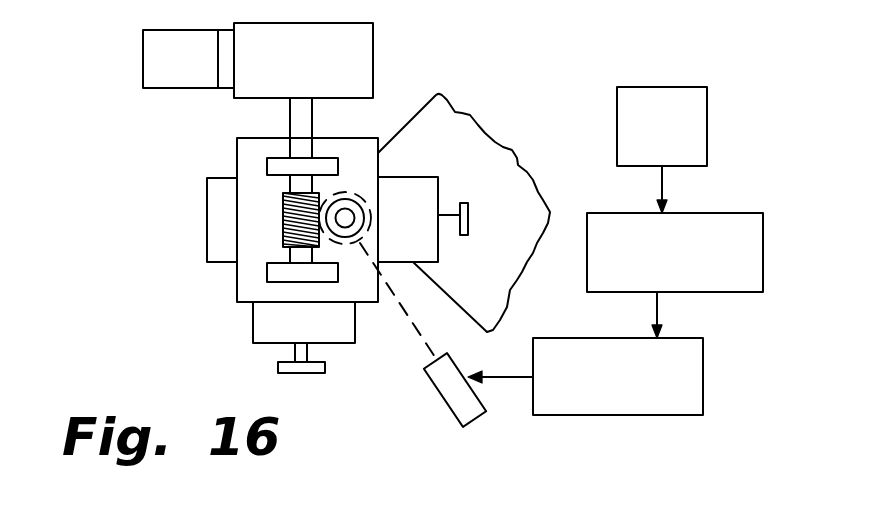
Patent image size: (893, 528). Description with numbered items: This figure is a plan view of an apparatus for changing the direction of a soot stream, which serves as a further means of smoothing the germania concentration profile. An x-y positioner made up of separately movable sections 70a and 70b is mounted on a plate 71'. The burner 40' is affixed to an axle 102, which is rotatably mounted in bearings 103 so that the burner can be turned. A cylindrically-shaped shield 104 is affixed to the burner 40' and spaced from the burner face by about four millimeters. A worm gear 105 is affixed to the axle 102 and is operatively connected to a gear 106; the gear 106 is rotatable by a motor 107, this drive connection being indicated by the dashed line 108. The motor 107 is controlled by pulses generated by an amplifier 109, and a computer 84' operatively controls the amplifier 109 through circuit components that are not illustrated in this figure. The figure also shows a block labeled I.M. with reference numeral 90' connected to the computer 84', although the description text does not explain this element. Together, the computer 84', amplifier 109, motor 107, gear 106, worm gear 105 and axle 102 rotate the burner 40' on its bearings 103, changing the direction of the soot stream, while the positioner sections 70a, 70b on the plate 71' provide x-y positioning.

The cylindrically-shaped shield 104 is at (158, 57).
The burner 40' is at (341, 60).
The axle 102 is at (300, 118).
The bearings 103 is at (283, 166).
The worm gear 105 is at (293, 217).
The gear 106 is at (364, 218).
The movable section of x-y positioner 70a is at (270, 327).
The movable section of x-y positioner 70b is at (428, 253).
The plate 71' is at (469, 213).
The dashed line 108 is at (407, 318).
The motor 107 is at (450, 393).
The input module 90' is at (694, 126).
The computer 84' is at (712, 229).
The amplifier 109 is at (703, 375).